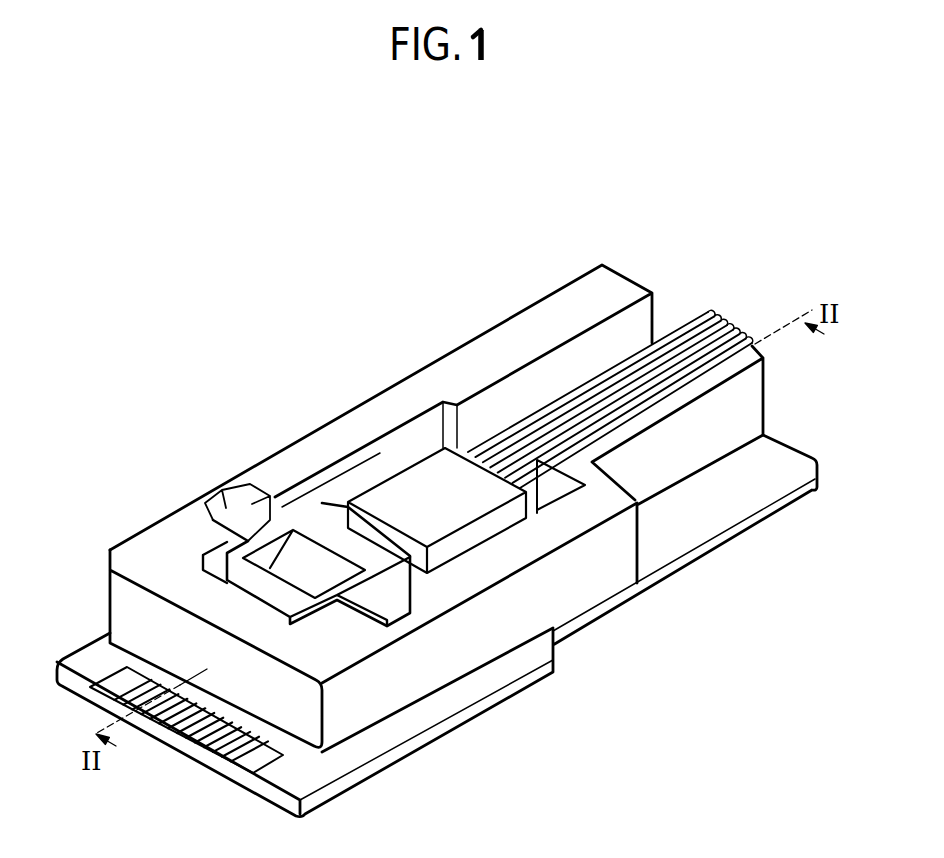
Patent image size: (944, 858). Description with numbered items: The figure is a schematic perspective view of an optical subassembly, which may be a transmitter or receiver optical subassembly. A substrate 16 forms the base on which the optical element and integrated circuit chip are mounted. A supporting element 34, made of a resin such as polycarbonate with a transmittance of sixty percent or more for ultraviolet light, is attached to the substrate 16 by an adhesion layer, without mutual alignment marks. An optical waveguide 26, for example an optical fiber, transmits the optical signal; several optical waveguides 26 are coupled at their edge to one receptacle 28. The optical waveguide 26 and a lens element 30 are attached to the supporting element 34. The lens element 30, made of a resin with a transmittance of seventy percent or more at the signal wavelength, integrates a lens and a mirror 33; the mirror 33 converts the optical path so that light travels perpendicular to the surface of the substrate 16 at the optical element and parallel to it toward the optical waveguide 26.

The substrate 16 is at (512, 687).
The optical waveguide 26 is at (692, 318).
The receptacle 28 is at (425, 468).
The lens element 30 is at (312, 520).
The mirror 33 is at (293, 563).
The supporting element 34 is at (383, 693).